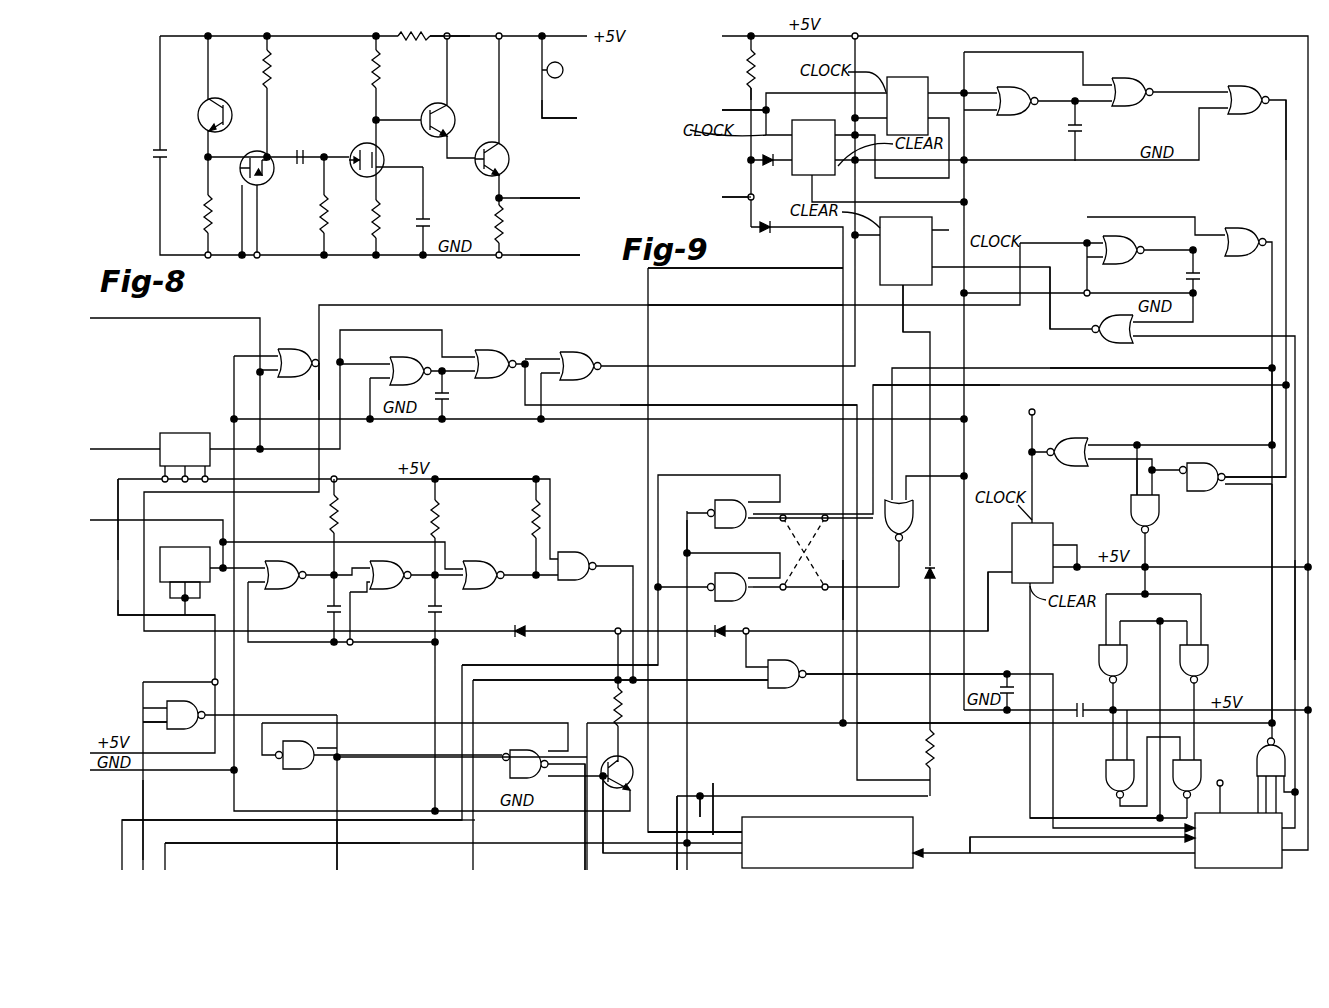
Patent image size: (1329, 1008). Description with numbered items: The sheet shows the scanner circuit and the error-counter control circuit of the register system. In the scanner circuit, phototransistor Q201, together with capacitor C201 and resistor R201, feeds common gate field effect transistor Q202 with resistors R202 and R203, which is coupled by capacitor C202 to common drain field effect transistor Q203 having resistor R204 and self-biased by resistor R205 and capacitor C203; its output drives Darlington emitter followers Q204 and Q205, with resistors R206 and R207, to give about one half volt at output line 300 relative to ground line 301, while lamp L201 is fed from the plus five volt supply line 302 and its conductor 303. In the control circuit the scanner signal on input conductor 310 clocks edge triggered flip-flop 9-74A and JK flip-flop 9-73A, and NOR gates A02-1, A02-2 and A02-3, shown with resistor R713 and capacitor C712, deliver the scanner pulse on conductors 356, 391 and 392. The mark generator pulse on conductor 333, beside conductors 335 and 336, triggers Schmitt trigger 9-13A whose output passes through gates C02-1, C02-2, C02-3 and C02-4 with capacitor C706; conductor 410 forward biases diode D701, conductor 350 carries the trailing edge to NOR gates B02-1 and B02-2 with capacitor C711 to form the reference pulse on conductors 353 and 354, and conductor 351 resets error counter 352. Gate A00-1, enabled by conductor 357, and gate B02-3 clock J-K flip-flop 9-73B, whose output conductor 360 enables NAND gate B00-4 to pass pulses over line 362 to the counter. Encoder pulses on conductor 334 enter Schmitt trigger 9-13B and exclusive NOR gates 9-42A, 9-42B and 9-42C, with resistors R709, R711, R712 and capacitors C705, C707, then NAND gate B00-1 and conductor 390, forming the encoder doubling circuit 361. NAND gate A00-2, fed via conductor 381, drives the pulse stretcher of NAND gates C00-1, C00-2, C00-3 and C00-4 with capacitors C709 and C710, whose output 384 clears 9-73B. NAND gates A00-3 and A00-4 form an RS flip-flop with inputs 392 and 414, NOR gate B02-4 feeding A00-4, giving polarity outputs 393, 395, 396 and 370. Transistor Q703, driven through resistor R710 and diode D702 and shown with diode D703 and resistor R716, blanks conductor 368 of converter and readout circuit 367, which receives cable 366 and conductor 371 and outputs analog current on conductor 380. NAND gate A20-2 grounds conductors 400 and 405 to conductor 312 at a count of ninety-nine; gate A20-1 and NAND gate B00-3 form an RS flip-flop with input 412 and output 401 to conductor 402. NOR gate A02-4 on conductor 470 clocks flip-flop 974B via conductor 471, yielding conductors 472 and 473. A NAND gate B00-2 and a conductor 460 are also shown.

In FIG. 8, the capacitor C201 is at (139, 139).
In FIG. 8, the phototransistor Q201 is at (228, 98).
In FIG. 8, the resistor R201 is at (204, 198).
In FIG. 8, the resistor R202 is at (272, 66).
In FIG. 8, the common gate field effect transistor Q202 is at (270, 180).
In FIG. 8, the coupling capacitor C202 is at (298, 151).
In FIG. 8, the resistor R203 is at (320, 210).
In FIG. 8, the common drain field effect transistor Q203 is at (357, 146).
In FIG. 8, the resistor R204 is at (370, 70).
In FIG. 8, the self-bias resistor R205 is at (380, 210).
In FIG. 8, the resistor R206 is at (412, 48).
In FIG. 8, the Darlington emitter follower transistor Q204 is at (428, 134).
In FIG. 8, the Darlington emitter follower transistor Q205 is at (512, 158).
In FIG. 8, the self-bias capacitor C203 is at (430, 218).
In FIG. 8, the resistor R207 is at (506, 222).
In FIG. 8, the lamp L201 is at (565, 74).
In FIG. 8, the supply line 302 is at (457, 40).
In FIG. 8, the conductor 303 is at (567, 114).
In FIG. 8, the output line 300 is at (549, 190).
In FIG. 8, the ground line 301 is at (537, 257).
In FIG. 9, the JK flip-flop 9-73A is at (793, 121).
In FIG. 9, the edge triggered flip-flop 9-74A is at (905, 77).
In FIG. 9, the flip-flop 974B is at (934, 241).
In FIG. 9, the Schmitt trigger circuit 9-13A is at (182, 433).
In FIG. 9, the Schmitt trigger circuit 9-13B is at (163, 548).
In FIG. 9, the J-K flip-flop 9-73B is at (1048, 522).
In FIG. 9, the digital to analog converter and readout circuit 367 is at (792, 820).
In FIG. 9, the error counter 352 is at (1195, 862).
In FIG. 9, the resistor R713 is at (757, 68).
In FIG. 9, the resistor R709 is at (328, 514).
In FIG. 9, the resistor R711 is at (432, 512).
In FIG. 9, the resistor R712 is at (533, 512).
In FIG. 9, the resistor R710 is at (614, 698).
In FIG. 9, the resistor R716 is at (936, 755).
In FIG. 9, the capacitor C712 is at (1085, 127).
In FIG. 9, the capacitor C711 is at (1203, 280).
In FIG. 9, the capacitor C706 is at (452, 399).
In FIG. 9, the capacitor C705 is at (326, 612).
In FIG. 9, the capacitor C707 is at (426, 608).
In FIG. 9, the capacitor C709 is at (1002, 684).
In FIG. 9, the capacitor C710 is at (1087, 704).
In FIG. 9, the diode D701 is at (518, 625).
In FIG. 9, the diode D702 is at (717, 640).
In FIG. 9, the diode D703 is at (940, 574).
In FIG. 9, the NOR gate C02-1 is at (293, 349).
In FIG. 9, the gate C02-2 is at (420, 350).
In FIG. 9, the gate C02-3 is at (497, 350).
In FIG. 9, the gate C02-4 is at (577, 352).
In FIG. 9, the exclusive NOR gate 9-42A is at (266, 562).
In FIG. 9, the exclusive NOR gate 9-42B is at (378, 557).
In FIG. 9, the exclusive NOR gate 9-42C is at (478, 557).
In FIG. 9, the NOR gate A02-1 is at (1010, 80).
In FIG. 9, the NOR gate A02-2 is at (1133, 78).
In FIG. 9, the NOR gate A02-3 is at (1242, 85).
In FIG. 9, the NOR gate A02-4 is at (1122, 343).
In FIG. 9, the NOR gate B02-1 is at (1113, 232).
In FIG. 9, the NOR gate B02-2 is at (1238, 229).
In FIG. 9, the gate B02-3 is at (1069, 438).
In FIG. 9, the NOR gate B02-4 is at (889, 538).
In FIG. 9, the NAND gate B00-1 is at (578, 560).
In FIG. 9, the NAND gate B00-2 is at (177, 707).
In FIG. 9, the NAND gate B00-3 is at (285, 770).
In FIG. 9, the NAND gate B00-4 is at (782, 688).
In FIG. 9, the gate A00-1 is at (1200, 490).
In FIG. 9, the NAND gate A00-2 is at (1158, 516).
In FIG. 9, the NAND gate A00-3 is at (733, 500).
In FIG. 9, the NAND gate A00-4 is at (732, 601).
In FIG. 9, the gate A20-1 is at (536, 750).
In FIG. 9, the NAND gate A20-2 is at (1258, 752).
In FIG. 9, the NAND gate C00-1 is at (1208, 664).
In FIG. 9, the NAND gate C00-2 is at (1098, 650).
In FIG. 9, the NAND gate C00-3 is at (1210, 770).
In FIG. 9, the NAND gate C00-4 is at (1106, 762).
In FIG. 9, the transistor Q703 is at (630, 760).
In FIG. 9, the input conductor 310 is at (728, 98).
In FIG. 9, the input conductor 312 is at (724, 198).
In FIG. 9, the conductor 391 is at (1285, 128).
In FIG. 9, the conductor 471 is at (1040, 300).
In FIG. 9, the conductor 472 is at (905, 320).
In FIG. 9, the conductor 473 is at (760, 270).
In FIG. 9, the conductor 350 is at (744, 306).
In FIG. 9, the conductor 351 is at (722, 406).
In FIG. 9, the conductor 354 is at (1037, 370).
In FIG. 9, the conductor 353 is at (1270, 406).
In FIG. 9, the conductor 356 is at (1256, 474).
In FIG. 9, the conductor 357 is at (1272, 552).
In FIG. 9, the conductor 470 is at (1293, 595).
In FIG. 9, the input conductor 414 is at (860, 600).
In FIG. 9, the conductor 360 is at (988, 600).
In FIG. 9, the conductor 392 is at (800, 512).
In FIG. 9, the output conductor 393 is at (690, 545).
In FIG. 9, the conductor 381 is at (1137, 475).
In FIG. 9, the output conductor 410 is at (320, 395).
In FIG. 9, the feedback conductor 335 is at (152, 330).
In FIG. 9, the input conductor 333 is at (118, 454).
In FIG. 9, the conductor 336 is at (100, 500).
In FIG. 9, the input conductor 334 is at (103, 572).
In FIG. 9, the encoder doubling circuit 361 is at (470, 506).
In FIG. 9, the output conductor 395 is at (526, 667).
In FIG. 9, the line 460 is at (143, 724).
In FIG. 9, the conductor 401 is at (363, 767).
In FIG. 9, the conductor 371 is at (713, 785).
In FIG. 9, the output conductor 380 is at (740, 793).
In FIG. 9, the conductor 368 is at (606, 828).
In FIG. 9, the conductor 370 is at (690, 848).
In FIG. 9, the conductor 412 is at (583, 826).
In FIG. 9, the conductor 390 is at (458, 832).
In FIG. 9, the conductor 396 is at (205, 850).
In FIG. 9, the conductor 402 is at (337, 835).
In FIG. 9, the line 362 is at (866, 676).
In FIG. 9, the conductor 405 is at (845, 690).
In FIG. 9, the conductor 400 is at (874, 727).
In FIG. 9, the cable 366 is at (950, 852).
In FIG. 9, the output conductor 384 is at (1095, 800).